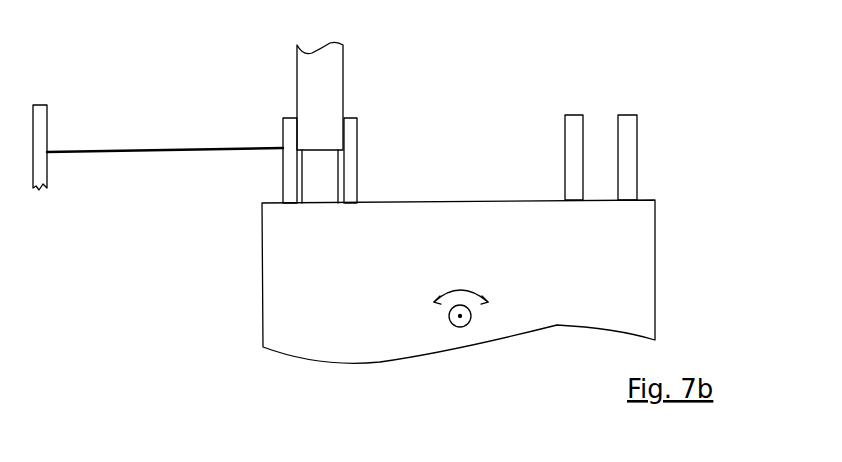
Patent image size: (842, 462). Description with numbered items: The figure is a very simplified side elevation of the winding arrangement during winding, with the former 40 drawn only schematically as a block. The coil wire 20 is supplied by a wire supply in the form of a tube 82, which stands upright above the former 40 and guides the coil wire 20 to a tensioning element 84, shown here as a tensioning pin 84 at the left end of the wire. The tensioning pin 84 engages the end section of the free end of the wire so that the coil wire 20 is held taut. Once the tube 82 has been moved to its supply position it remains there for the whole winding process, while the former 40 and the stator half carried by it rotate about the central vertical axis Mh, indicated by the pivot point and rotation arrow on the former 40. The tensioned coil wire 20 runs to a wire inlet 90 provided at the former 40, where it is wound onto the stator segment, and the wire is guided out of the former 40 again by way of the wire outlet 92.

The tensioning element 84 is at (50, 124).
The coil wire 20 is at (175, 146).
The tube 82 is at (328, 85).
The wire inlet 90 is at (348, 182).
The wire outlet 92 is at (575, 128).
The former 40 is at (625, 277).
The central vertical axis Mh is at (455, 328).